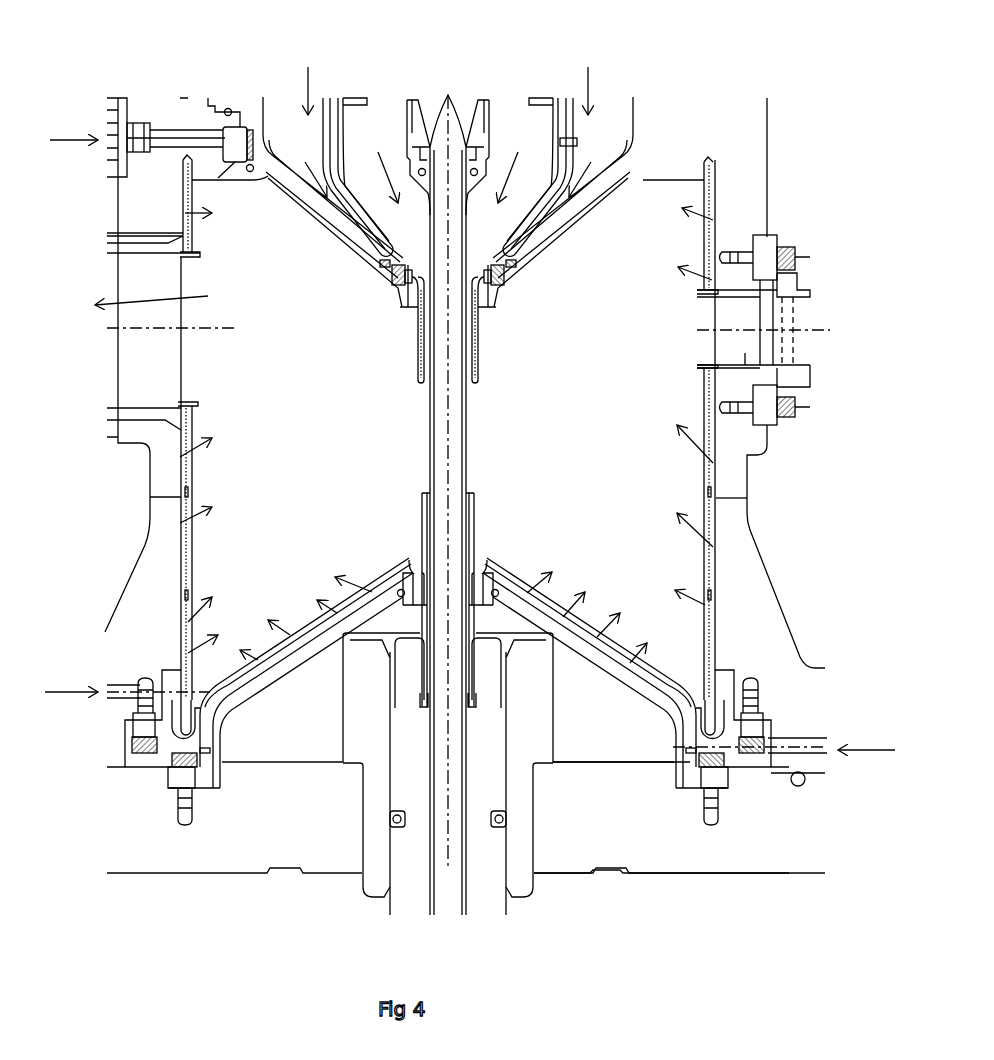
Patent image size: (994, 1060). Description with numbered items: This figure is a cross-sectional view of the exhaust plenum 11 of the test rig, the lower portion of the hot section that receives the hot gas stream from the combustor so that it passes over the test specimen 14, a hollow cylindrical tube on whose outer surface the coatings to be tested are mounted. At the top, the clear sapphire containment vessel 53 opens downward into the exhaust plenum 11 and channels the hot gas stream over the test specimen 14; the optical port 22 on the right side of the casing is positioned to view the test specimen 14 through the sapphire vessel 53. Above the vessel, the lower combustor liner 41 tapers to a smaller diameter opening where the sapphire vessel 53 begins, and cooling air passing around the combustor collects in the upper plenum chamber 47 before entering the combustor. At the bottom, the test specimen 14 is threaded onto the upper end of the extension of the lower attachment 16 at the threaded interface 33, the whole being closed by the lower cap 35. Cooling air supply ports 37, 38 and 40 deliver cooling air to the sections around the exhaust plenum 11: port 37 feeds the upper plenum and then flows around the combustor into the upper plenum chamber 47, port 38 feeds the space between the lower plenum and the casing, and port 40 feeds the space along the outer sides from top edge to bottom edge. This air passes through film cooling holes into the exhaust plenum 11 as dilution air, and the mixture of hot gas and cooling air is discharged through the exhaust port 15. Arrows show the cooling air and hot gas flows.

The exhaust mixing plenum 11 is at (272, 522).
The test specimen 14 is at (466, 447).
The exhaust port 15 is at (150, 357).
The lower attachment 16 is at (478, 868).
The optical port 22 is at (790, 337).
The threaded interface 33 is at (425, 660).
The lower cap 35 is at (660, 838).
The cooling air port 37 is at (117, 138).
The cooling air port 38 is at (822, 745).
The cooling air port 40 is at (118, 692).
The lower combustor liner 41 is at (742, 578).
The upper plenum chamber 47 is at (295, 133).
The sapphire containment vessel 53 is at (477, 360).